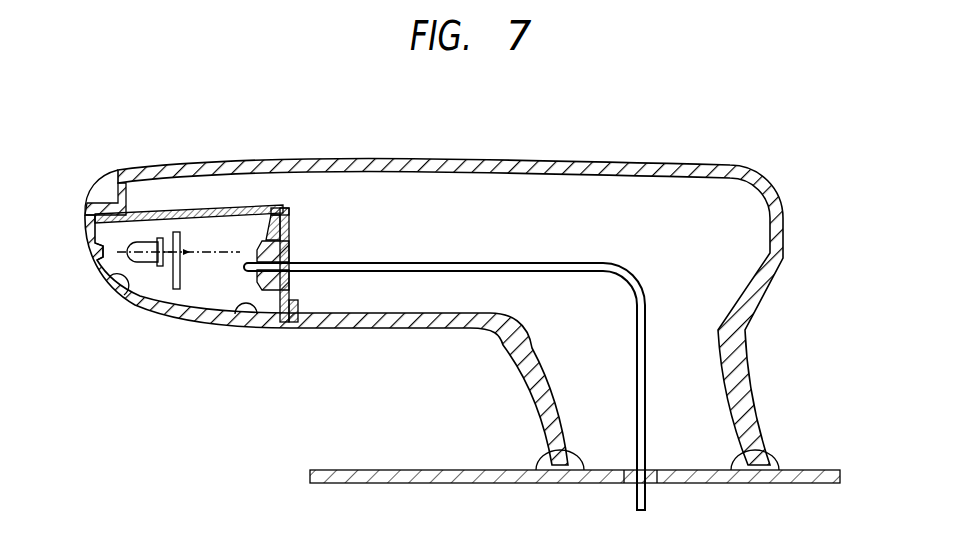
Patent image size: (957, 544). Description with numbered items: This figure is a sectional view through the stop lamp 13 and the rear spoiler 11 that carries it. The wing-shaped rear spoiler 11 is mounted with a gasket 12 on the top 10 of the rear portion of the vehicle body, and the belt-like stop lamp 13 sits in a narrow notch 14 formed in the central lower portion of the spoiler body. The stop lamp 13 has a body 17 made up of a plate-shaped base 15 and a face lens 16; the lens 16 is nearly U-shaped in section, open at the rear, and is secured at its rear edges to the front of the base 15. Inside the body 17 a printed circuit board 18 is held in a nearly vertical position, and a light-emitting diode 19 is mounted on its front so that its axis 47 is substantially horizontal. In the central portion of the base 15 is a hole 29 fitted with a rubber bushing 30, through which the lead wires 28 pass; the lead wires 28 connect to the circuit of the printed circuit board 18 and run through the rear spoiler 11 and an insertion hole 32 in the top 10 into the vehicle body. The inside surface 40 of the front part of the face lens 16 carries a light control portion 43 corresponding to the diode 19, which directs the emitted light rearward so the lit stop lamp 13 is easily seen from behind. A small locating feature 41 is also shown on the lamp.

The top of the rear portion of the vehicle body 10 is at (825, 468).
The rear spoiler 11 is at (664, 163).
The gasket 12 is at (777, 466).
The stop lamp 13 is at (141, 377).
The notch 14 is at (87, 217).
The base 15 is at (298, 217).
The face lens 16 is at (260, 206).
The body 17 is at (231, 197).
The printed circuit board 18 is at (180, 290).
The light-emitting diode 19 is at (151, 240).
The lead wires 28 is at (458, 262).
The hole 29 is at (289, 271).
The rubber bushing 30 is at (289, 247).
The insertion hole 32 is at (656, 487).
The inside surface 40 is at (125, 298).
The locating bump 41 is at (257, 326).
The light control portion 43 is at (112, 236).
The axis 47 is at (213, 250).